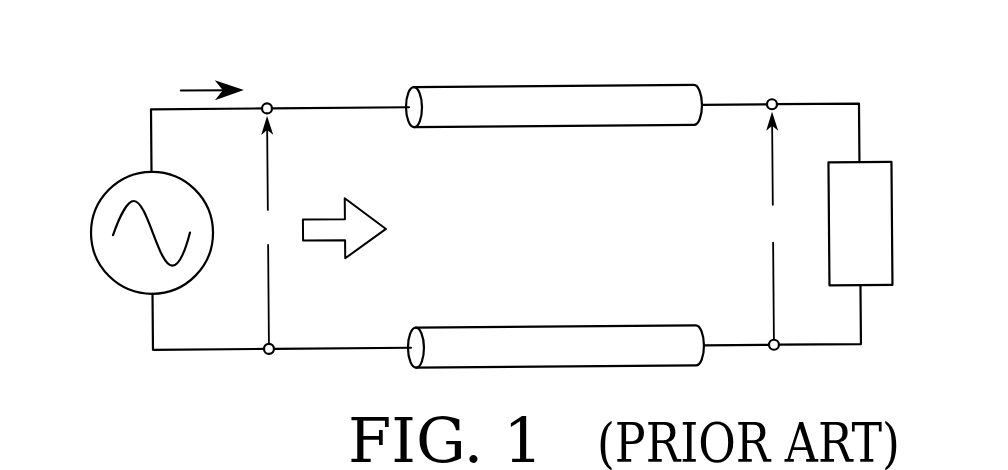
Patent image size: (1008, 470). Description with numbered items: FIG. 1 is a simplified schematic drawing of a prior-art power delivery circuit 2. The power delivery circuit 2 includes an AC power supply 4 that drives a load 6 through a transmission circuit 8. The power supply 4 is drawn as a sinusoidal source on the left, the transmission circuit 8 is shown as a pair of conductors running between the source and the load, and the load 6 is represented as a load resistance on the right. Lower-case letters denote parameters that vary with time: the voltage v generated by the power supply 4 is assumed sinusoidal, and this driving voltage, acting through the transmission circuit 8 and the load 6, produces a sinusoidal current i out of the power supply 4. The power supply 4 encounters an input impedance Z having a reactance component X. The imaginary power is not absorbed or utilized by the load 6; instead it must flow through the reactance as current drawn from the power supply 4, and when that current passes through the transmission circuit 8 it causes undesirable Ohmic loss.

The power delivery circuit 2 is at (486, 191).
The AC power supply 4 is at (91, 230).
The load 6 is at (892, 193).
The transmission circuit 8 is at (521, 86).